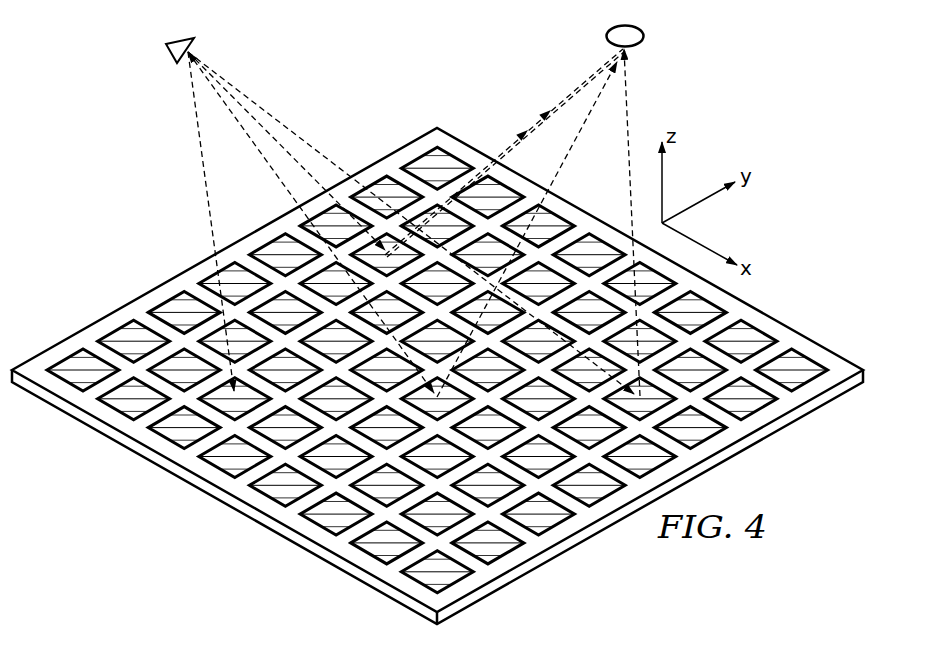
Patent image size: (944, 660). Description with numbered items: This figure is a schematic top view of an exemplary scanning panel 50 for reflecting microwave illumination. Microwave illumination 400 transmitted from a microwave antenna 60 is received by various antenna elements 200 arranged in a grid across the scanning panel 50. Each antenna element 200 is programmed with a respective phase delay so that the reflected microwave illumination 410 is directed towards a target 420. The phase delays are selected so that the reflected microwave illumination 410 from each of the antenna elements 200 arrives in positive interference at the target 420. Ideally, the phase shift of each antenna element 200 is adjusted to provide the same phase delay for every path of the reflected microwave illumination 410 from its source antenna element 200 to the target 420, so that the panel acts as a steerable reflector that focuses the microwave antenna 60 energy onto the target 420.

The scanning panel 50 is at (238, 505).
The antenna element 200 is at (467, 577).
The microwave antenna 60 is at (165, 47).
The microwave illumination 400 is at (202, 166).
The reflected microwave illumination 410 is at (513, 143).
The target 420 is at (643, 36).